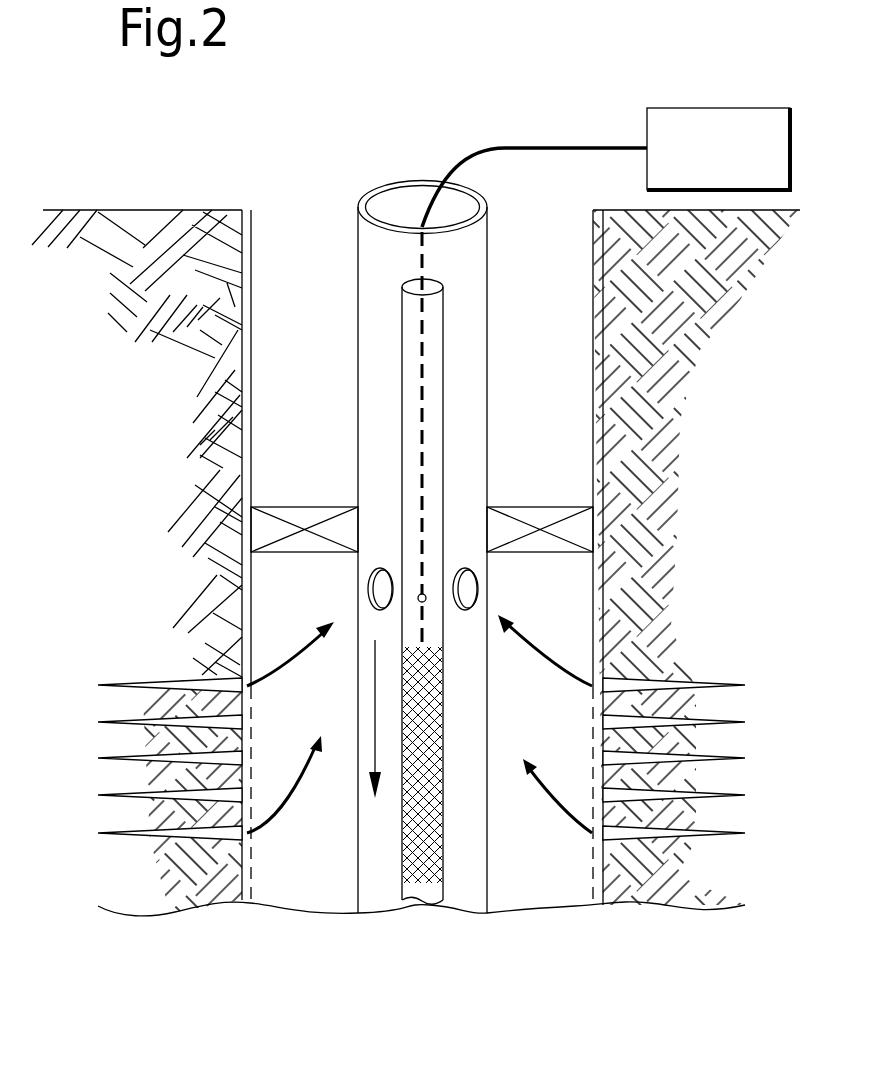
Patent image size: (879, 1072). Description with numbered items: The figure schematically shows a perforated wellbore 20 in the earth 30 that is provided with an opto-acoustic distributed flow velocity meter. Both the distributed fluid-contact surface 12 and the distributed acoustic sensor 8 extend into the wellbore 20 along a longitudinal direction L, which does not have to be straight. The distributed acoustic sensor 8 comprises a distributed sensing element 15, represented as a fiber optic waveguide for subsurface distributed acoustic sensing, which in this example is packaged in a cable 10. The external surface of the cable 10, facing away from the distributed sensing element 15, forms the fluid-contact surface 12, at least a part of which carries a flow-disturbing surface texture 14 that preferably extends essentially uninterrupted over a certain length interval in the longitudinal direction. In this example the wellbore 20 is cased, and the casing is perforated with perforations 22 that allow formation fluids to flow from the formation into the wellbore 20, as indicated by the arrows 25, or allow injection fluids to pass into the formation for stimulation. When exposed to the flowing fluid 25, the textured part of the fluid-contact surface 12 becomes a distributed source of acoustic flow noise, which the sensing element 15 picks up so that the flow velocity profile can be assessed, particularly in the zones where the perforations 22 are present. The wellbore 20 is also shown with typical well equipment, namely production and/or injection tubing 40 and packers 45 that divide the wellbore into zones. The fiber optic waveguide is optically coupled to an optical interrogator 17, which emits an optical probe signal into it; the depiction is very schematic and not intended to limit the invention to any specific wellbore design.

The distributed acoustic sensor 8 is at (525, 110).
The cable 10 is at (402, 327).
The distributed fluid-contact surface 12 is at (423, 593).
The flow-disturbing surface texture 14 is at (443, 762).
The distributed sensing element 15 is at (427, 397).
The optical interrogator 17 is at (728, 161).
The wellbore 20 is at (176, 468).
The perforations 22 is at (250, 797).
The arrows indicating flowing fluid 25 is at (296, 650).
The earth 30 is at (128, 378).
The production and/or injection tubing 40 is at (360, 203).
The packers 45 is at (540, 515).
The longitudinal direction L is at (375, 720).